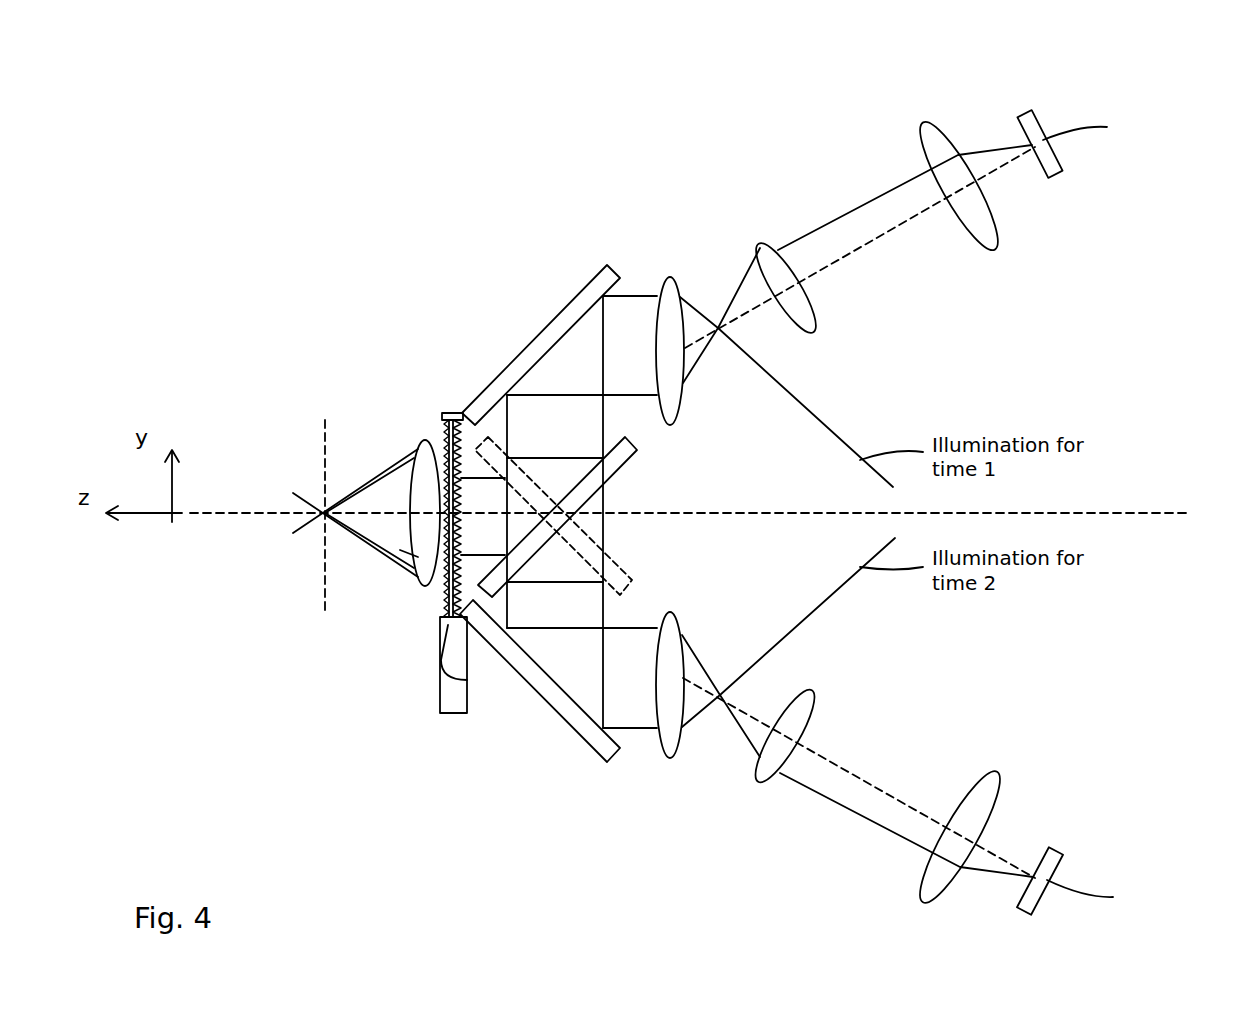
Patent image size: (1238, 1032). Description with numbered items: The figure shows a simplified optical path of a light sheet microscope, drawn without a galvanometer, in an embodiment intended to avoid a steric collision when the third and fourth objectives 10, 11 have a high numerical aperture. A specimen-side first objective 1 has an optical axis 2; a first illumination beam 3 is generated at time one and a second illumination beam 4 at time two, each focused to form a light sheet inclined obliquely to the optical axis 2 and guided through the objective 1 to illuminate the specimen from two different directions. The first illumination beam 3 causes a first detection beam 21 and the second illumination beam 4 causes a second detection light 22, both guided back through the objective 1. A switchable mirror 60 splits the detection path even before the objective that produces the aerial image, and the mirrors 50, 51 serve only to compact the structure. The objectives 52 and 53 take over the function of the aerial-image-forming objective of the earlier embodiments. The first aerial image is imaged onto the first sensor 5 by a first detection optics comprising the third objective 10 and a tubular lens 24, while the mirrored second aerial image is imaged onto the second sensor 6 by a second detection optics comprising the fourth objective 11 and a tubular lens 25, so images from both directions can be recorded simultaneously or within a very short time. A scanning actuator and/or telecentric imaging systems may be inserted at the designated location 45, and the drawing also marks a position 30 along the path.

The first objective 1 is at (433, 448).
The optical axis 2 is at (242, 513).
The first illumination beam 3 is at (380, 492).
The second illumination beam 4 is at (383, 552).
The first sensor 5 is at (1062, 862).
The second sensor 6 is at (1040, 127).
The third objective 10 is at (760, 780).
The fourth objective 11 is at (762, 243).
The first detection beam 21 is at (400, 550).
The second detection light 22 is at (430, 448).
The tubular lens 24 is at (997, 772).
The tubular lens 25 is at (923, 122).
The focal plane 30 is at (325, 610).
The designated location 45 is at (453, 720).
The mirror 50 is at (532, 340).
The mirror 51 is at (567, 727).
The objective 52 is at (667, 277).
The objective 53 is at (668, 758).
The switchable mirror 60 is at (613, 557).